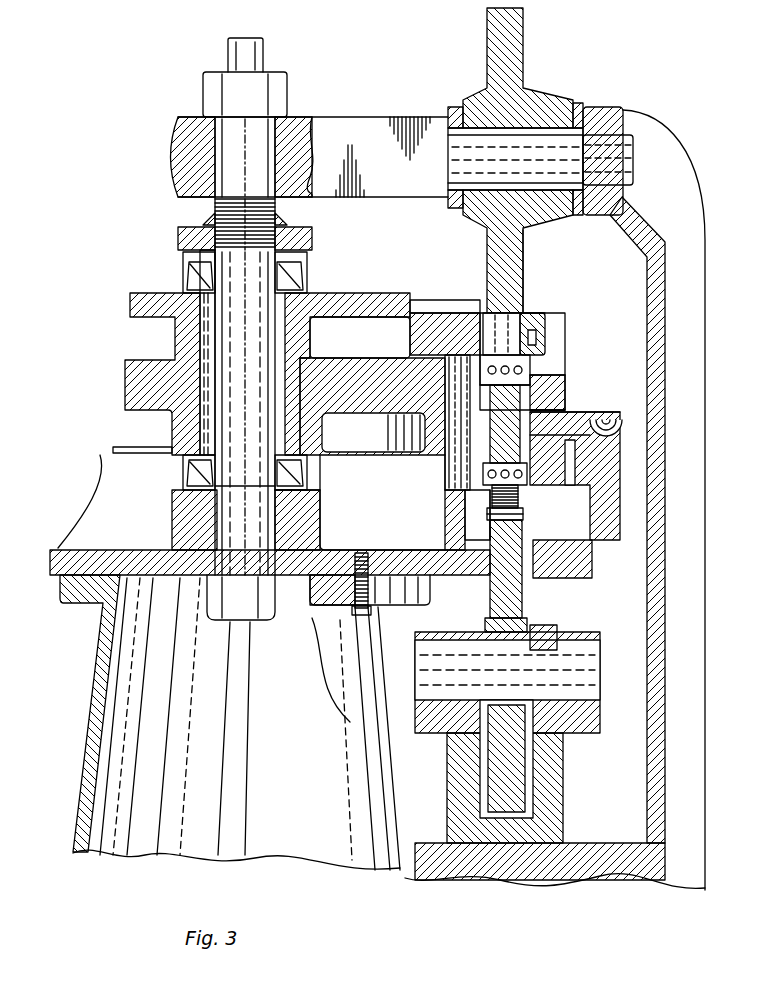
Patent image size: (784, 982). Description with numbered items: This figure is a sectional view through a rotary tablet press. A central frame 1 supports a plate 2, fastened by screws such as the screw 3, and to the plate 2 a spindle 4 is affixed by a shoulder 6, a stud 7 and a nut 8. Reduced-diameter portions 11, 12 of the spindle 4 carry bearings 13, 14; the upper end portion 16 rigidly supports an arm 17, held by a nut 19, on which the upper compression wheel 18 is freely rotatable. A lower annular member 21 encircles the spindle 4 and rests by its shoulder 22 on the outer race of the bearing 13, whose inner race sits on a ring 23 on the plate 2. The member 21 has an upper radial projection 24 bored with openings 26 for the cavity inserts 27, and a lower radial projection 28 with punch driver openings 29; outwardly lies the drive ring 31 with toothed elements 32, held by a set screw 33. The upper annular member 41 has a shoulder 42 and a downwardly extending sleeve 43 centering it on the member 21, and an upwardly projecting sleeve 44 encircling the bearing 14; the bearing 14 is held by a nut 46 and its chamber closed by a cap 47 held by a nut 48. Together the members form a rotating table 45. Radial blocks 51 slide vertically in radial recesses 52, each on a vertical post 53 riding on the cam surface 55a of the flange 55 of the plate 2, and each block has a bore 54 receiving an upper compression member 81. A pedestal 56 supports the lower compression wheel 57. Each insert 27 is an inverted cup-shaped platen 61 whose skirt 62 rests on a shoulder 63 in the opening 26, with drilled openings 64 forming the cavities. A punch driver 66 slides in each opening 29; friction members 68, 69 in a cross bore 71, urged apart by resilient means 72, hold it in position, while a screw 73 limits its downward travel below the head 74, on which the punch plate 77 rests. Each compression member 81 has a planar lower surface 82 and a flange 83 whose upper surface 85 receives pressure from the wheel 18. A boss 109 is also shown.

The central frame 1 is at (458, 878).
The plate 2 is at (322, 565).
The screw 3 is at (362, 557).
The spindle 4 is at (208, 328).
The shoulder 6 is at (264, 491).
The stud 7 is at (238, 523).
The nut 8 is at (272, 608).
The portion of reduced diameter 11 is at (208, 464).
The portion of reduced diameter 12 is at (205, 300).
The bearing 13 is at (307, 466).
The bearing 14 is at (195, 282).
The portion of further reduced diameter 16 is at (232, 143).
The arm 17 is at (380, 128).
The compression wheel 18 is at (524, 268).
The nut 19 is at (280, 92).
The lower annular member 21 is at (356, 385).
The shoulder 22 is at (322, 438).
The ring 23 is at (304, 479).
The upper radial projection 24 is at (528, 392).
The opening 26 is at (480, 410).
The cavity insert 27 is at (528, 380).
The lower radial projection 28 is at (572, 476).
The punch driver opening 29 is at (589, 457).
The drive ring 31 is at (545, 492).
The toothed element 32 is at (568, 462).
The set screw 33 is at (546, 507).
The upper annular member 41 is at (352, 303).
The shoulder 42 is at (313, 368).
The downwardly extending sleeve 43 is at (262, 377).
The upwardly projecting sleeve 44 is at (300, 284).
The table 45 is at (594, 341).
The nut 46 is at (205, 245).
The cap 47 is at (195, 222).
The nut 48 is at (286, 219).
The radial block 51 is at (447, 320).
The radial recess 52 is at (420, 303).
The vertical post 53 is at (452, 461).
The bore 54 is at (523, 292).
The flange 55 is at (452, 522).
The cam surface 55a is at (455, 494).
The pedestal 56 is at (548, 820).
The lower compression wheel 57 is at (524, 594).
The platen 61 is at (534, 347).
The skirt 62 is at (556, 395).
The shoulder 63 is at (545, 402).
The drilled opening 64 is at (478, 368).
The punch driver 66 is at (480, 441).
The friction member 68 is at (483, 474).
The friction member 69 is at (514, 490).
The cross bore 71 is at (490, 505).
The resilient means 72 is at (478, 515).
The screw 73 is at (558, 425).
The punch driver head 74 is at (548, 390).
The punch plate 77 is at (478, 382).
The upper compression member 81 is at (497, 325).
The lower surface 82 is at (524, 376).
The flange 83 is at (540, 315).
The upper surface 85 is at (528, 312).
The boss 109 is at (612, 430).